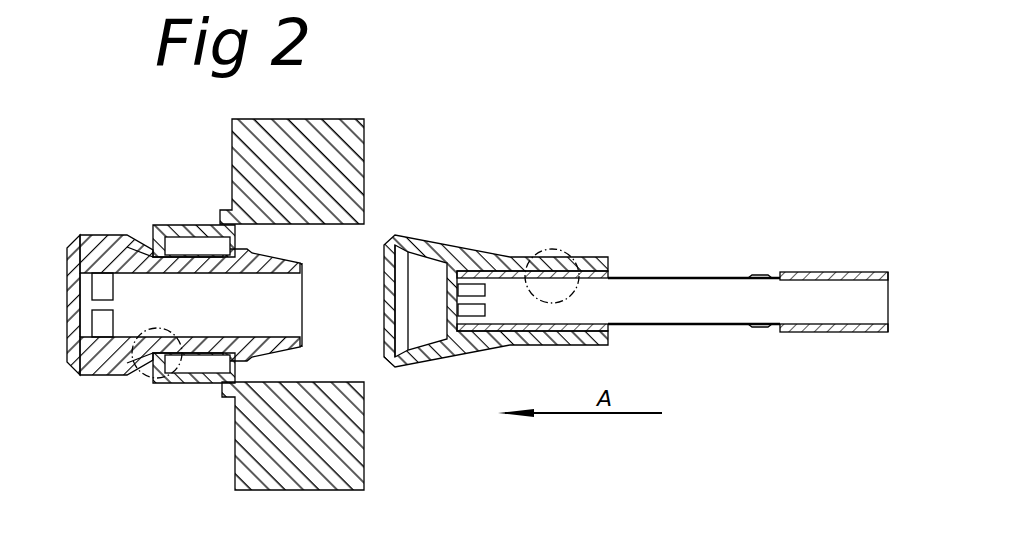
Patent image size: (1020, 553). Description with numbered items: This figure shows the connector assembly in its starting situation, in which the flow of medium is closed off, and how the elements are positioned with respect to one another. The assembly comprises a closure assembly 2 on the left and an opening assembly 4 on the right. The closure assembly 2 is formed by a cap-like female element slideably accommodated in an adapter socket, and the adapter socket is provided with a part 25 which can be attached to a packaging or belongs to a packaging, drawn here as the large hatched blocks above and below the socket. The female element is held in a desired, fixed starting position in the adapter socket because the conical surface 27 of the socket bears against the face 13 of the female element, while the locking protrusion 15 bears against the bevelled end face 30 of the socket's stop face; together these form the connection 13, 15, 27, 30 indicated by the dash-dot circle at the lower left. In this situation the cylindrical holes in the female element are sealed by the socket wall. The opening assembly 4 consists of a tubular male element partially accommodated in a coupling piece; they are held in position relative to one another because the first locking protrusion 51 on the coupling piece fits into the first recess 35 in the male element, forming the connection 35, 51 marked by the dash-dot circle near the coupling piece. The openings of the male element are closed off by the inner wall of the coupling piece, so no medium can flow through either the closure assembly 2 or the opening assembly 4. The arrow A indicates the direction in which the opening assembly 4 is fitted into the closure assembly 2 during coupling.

The closure assembly 2 is at (365, 86).
The opening assembly 4 is at (722, 256).
The part 25 is at (240, 168).
The face 13 is at (116, 399).
The locking protrusion 15 is at (116, 399).
The conical surface 27 is at (116, 399).
The bevelled end face 30 is at (140, 374).
The first recess 35 is at (530, 249).
The first locking protrusion 51 is at (552, 249).